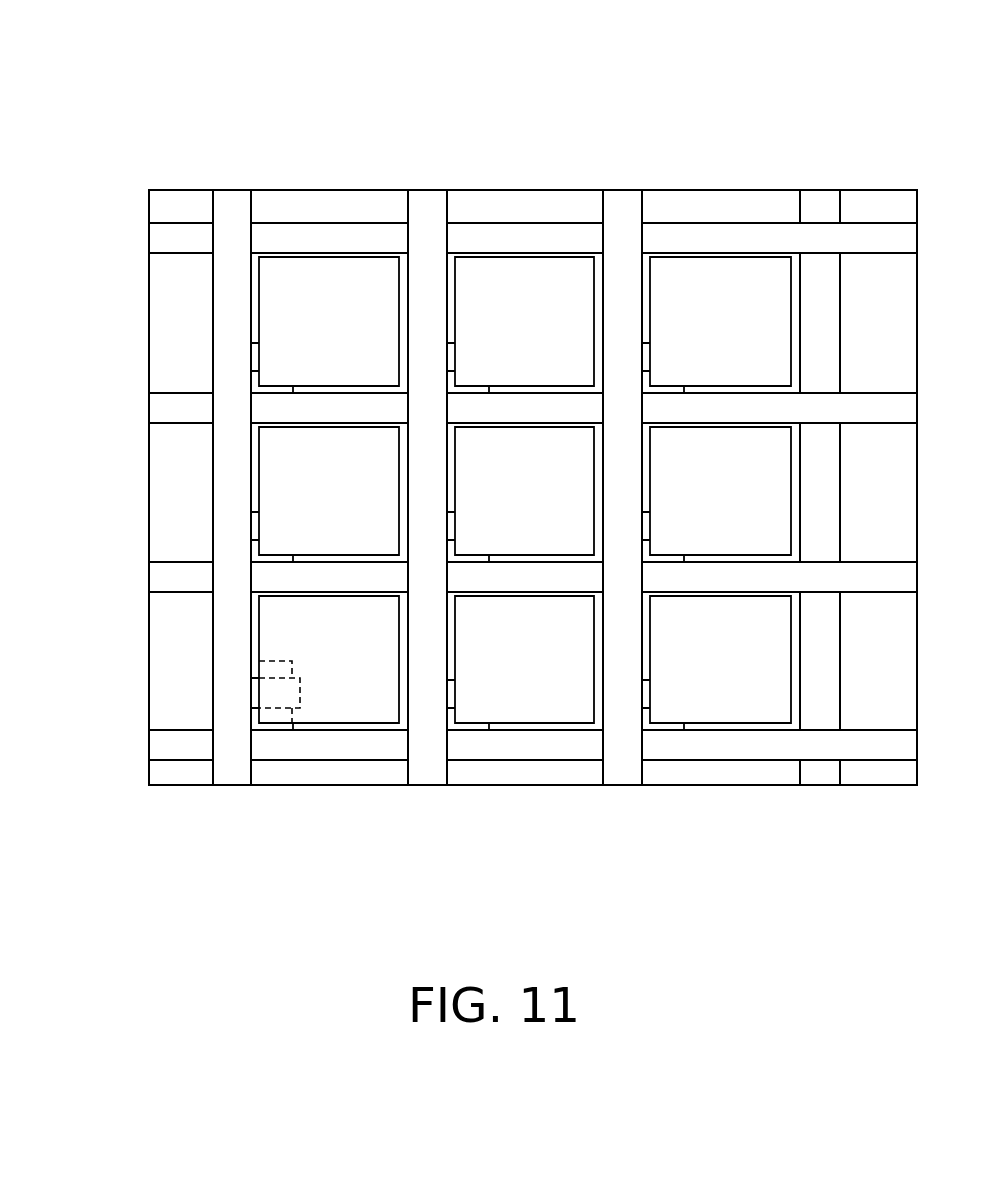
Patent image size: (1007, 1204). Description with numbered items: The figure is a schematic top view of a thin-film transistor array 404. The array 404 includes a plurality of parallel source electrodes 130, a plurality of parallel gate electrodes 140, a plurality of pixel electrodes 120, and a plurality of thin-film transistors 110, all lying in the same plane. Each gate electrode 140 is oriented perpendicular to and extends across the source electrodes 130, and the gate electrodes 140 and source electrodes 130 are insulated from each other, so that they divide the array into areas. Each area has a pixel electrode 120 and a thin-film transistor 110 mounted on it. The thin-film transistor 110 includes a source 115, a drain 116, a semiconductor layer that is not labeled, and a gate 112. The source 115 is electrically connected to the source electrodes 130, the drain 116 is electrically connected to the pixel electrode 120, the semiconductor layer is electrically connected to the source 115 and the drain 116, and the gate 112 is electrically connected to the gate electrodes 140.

The thin-film transistor array 404 is at (455, 122).
The thin-film transistor 110 is at (322, 782).
The gate 112 is at (301, 703).
The source 115 is at (260, 788).
The drain 116 is at (293, 669).
The pixel electrode 120 is at (280, 624).
The source electrode 130 is at (178, 749).
The gate electrode 140 is at (232, 713).